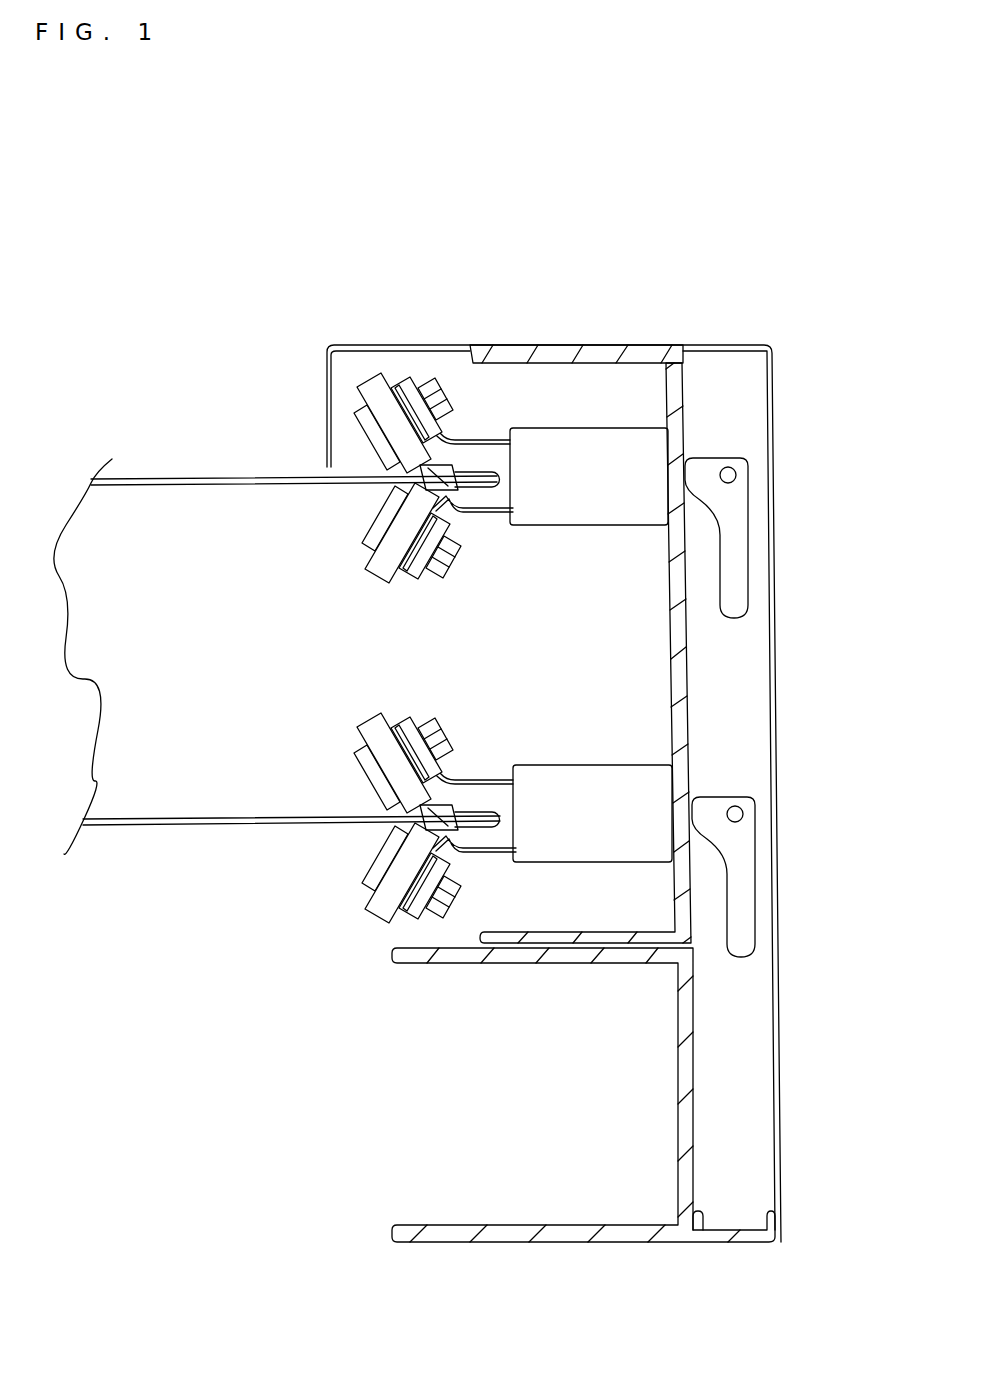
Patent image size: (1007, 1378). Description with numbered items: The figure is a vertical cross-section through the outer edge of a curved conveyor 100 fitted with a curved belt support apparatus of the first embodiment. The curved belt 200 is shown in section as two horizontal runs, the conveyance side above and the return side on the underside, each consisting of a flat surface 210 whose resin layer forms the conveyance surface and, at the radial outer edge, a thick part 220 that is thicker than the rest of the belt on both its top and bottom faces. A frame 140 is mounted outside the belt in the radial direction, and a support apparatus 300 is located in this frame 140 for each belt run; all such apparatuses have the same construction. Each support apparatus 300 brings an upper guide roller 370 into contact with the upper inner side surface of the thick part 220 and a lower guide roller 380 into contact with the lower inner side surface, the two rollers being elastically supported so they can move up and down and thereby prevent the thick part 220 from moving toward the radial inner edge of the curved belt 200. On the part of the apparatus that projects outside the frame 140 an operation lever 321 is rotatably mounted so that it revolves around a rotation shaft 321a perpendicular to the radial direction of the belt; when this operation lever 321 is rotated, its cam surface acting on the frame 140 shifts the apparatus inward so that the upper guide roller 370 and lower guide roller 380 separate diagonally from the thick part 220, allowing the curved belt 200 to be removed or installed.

The curved conveyor 100 is at (600, 272).
The frame 140 is at (690, 675).
The curved belt 200 is at (277, 657).
The flat surface 210 is at (258, 473).
The thick part 220 is at (457, 462).
The support apparatus 300 is at (600, 454).
The operation lever 321 is at (742, 563).
The rotation shaft 321a is at (735, 473).
The upper guide roller 370 is at (397, 427).
The lower guide roller 380 is at (382, 563).